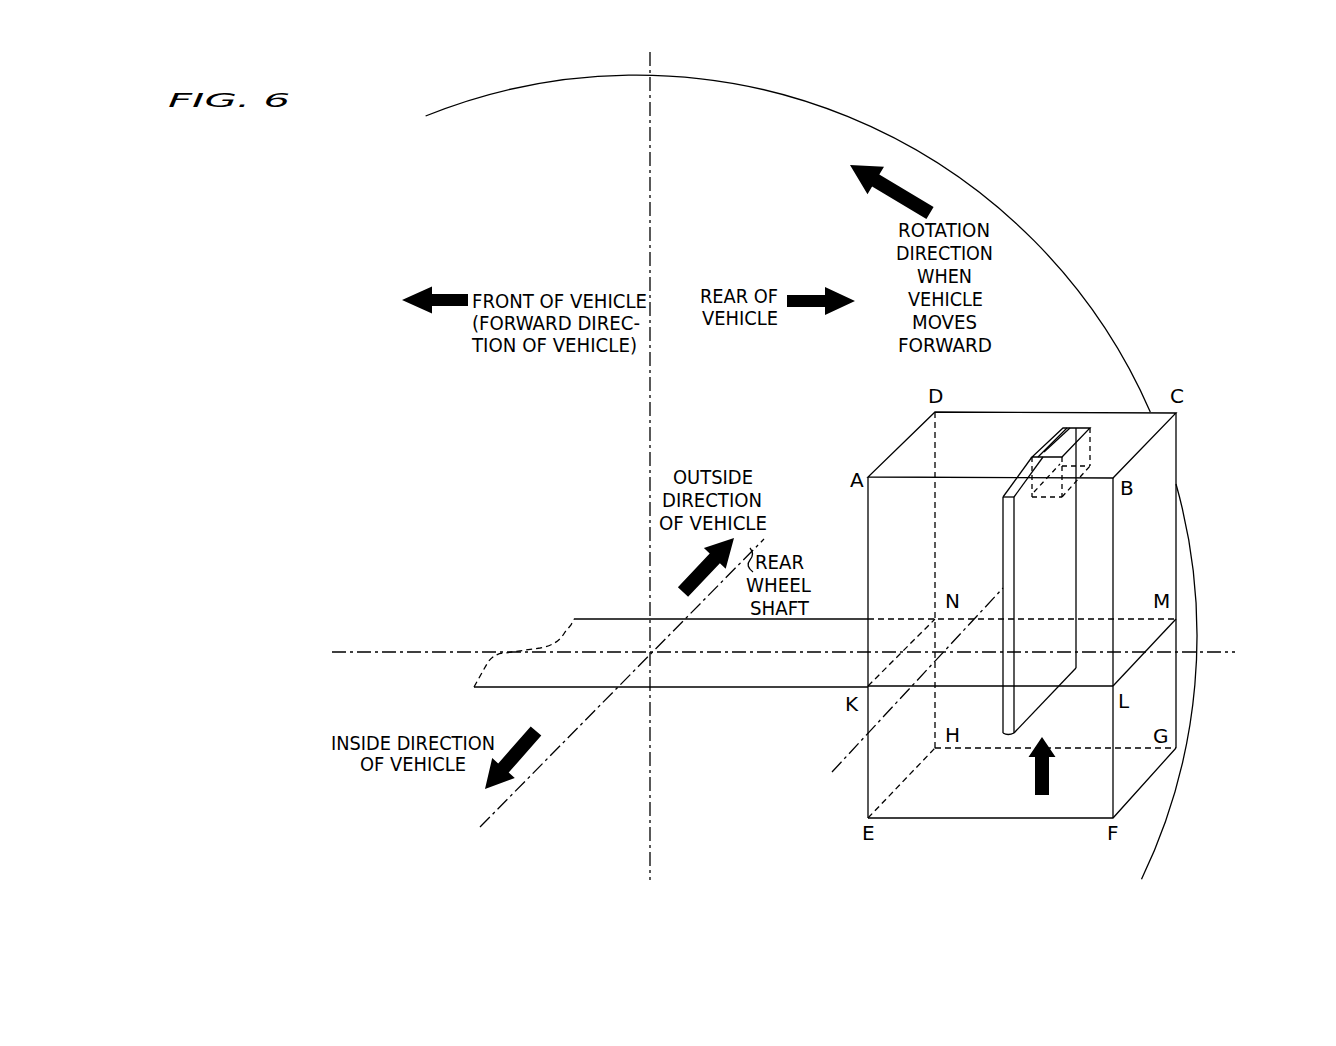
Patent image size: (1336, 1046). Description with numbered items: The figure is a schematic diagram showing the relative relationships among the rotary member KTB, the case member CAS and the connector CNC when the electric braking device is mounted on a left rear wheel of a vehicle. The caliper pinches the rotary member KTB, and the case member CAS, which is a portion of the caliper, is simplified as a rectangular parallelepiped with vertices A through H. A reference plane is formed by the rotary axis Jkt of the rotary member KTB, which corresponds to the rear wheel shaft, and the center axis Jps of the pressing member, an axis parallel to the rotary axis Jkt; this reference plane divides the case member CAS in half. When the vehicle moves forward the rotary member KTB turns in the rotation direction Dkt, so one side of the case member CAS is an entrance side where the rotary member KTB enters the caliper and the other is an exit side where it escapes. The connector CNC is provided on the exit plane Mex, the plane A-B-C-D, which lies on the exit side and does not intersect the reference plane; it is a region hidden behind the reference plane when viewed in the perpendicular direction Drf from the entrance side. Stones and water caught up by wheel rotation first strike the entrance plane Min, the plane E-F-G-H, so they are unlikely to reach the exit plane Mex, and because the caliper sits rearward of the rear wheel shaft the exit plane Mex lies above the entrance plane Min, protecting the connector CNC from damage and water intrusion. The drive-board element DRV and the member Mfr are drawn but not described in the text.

The rotary member KTB is at (1193, 605).
The rotation direction Dkt is at (872, 190).
The case member CAS is at (1053, 618).
The exit plane Mex is at (992, 420).
The entrance plane Min is at (993, 813).
The drive circuit board DRV is at (1003, 559).
The connector CNC is at (1083, 425).
The direction perpendicular to the reference plane Drf is at (1033, 773).
The rear wheel shaft mounting member Mfr is at (734, 692).
The rotary axis Jkt is at (539, 766).
The center axis Jps is at (825, 776).